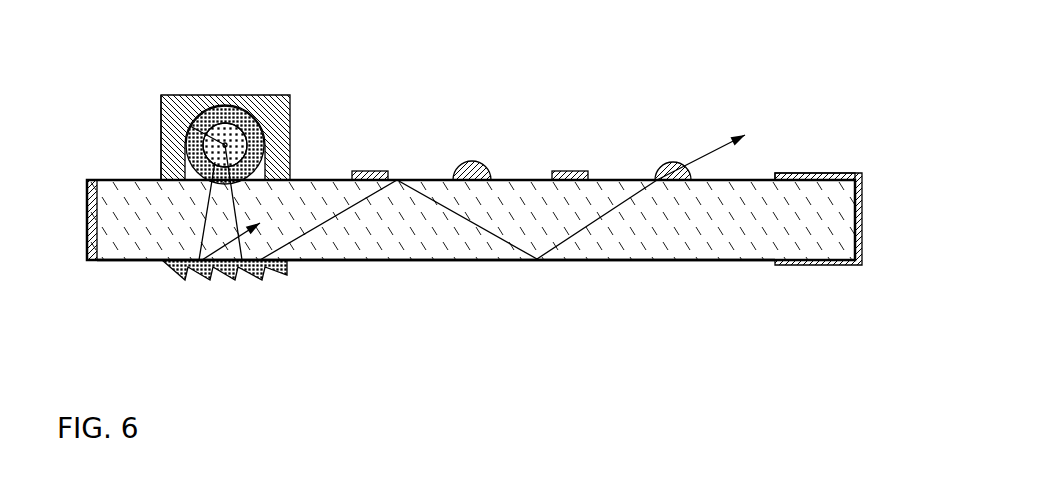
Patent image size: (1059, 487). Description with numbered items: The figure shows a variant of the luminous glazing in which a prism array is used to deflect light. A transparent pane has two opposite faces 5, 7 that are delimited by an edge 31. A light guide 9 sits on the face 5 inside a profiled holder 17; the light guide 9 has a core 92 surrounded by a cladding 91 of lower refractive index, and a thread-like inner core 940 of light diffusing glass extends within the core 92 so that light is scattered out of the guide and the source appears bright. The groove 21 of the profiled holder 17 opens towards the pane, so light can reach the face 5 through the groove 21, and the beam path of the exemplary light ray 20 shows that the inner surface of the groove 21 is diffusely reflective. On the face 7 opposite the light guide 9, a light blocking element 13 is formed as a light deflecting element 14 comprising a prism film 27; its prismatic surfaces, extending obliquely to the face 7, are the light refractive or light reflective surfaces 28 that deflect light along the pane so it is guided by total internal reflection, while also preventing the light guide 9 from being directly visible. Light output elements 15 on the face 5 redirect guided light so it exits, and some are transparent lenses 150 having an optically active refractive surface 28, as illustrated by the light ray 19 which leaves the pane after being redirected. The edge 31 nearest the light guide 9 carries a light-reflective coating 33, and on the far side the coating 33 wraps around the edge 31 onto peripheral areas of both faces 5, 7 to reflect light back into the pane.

The face 5 is at (755, 180).
The face 7 is at (692, 260).
The light guide 9 is at (248, 92).
The cladding 91 is at (224, 108).
The core 92 is at (240, 127).
The profiled holder 17 is at (167, 104).
The inner core 940 is at (162, 127).
The light-reflective coating 33 is at (86, 212).
The edge 31 is at (862, 248).
The light blocking element 13 is at (295, 318).
The light deflecting element 14 is at (224, 270).
The prism film 27 is at (287, 277).
The light refractive or light reflective surface 28 is at (177, 278).
The light output elements 15 is at (462, 162).
The lens element 150 is at (487, 161).
The light ray 19 is at (707, 143).
The light ray 20 is at (200, 238).
The groove 21 is at (258, 182).